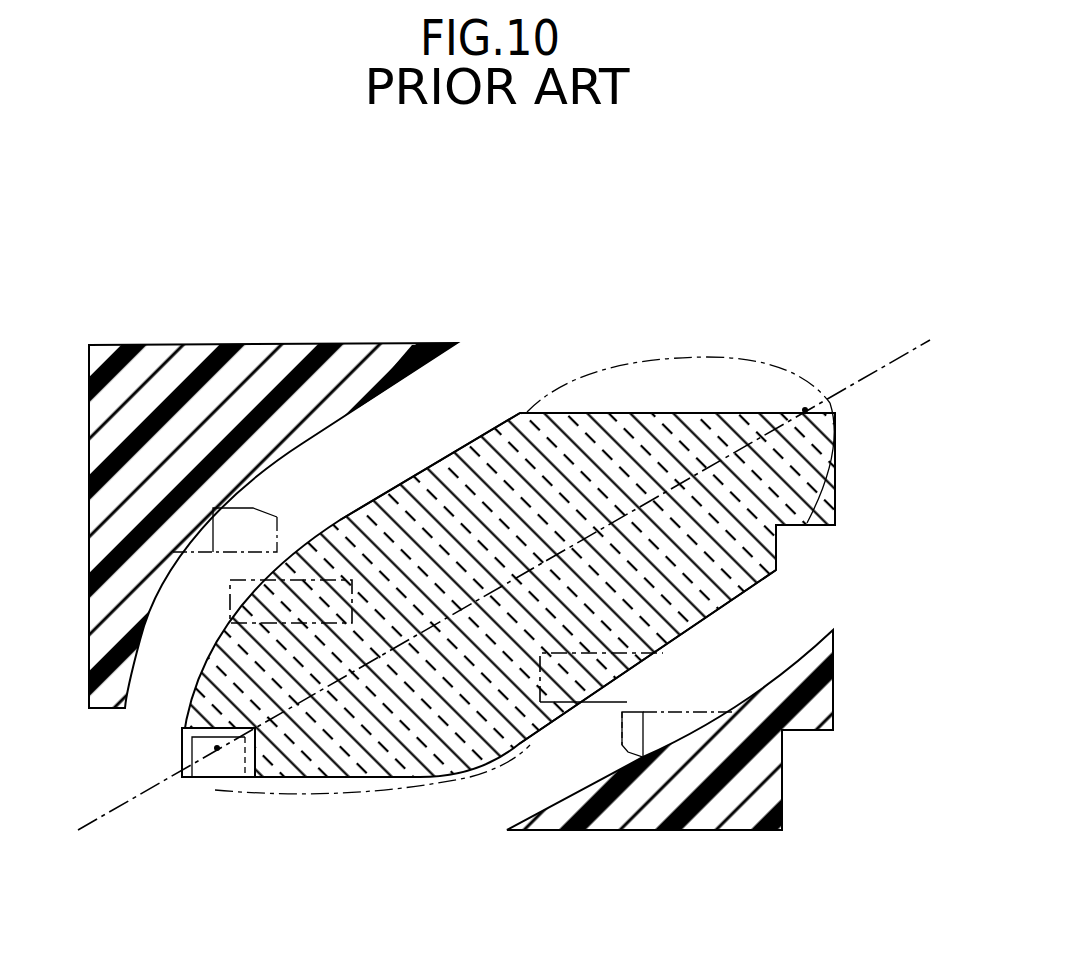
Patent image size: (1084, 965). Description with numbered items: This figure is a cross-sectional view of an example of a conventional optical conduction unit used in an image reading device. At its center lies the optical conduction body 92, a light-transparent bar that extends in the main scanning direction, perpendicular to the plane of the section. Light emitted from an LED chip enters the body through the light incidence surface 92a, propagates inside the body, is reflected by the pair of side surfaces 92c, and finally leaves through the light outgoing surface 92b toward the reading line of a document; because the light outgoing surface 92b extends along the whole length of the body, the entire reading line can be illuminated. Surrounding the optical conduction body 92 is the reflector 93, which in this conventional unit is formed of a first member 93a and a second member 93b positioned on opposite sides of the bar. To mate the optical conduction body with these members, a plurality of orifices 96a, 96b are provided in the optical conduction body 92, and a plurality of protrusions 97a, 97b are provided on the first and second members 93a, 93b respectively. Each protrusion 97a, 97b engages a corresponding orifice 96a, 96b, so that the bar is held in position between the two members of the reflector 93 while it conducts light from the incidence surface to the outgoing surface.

The optical conduction body 92 is at (537, 446).
The light incidence surface 92a is at (217, 748).
The light outgoing surface 92b is at (728, 413).
The side surfaces 92c is at (448, 450).
The reflector 93 is at (305, 342).
The first member 93a is at (190, 355).
The second member 93b is at (735, 830).
The orifice 96a is at (262, 605).
The orifice 96b is at (655, 662).
The protrusion 97a is at (240, 517).
The protrusion 97b is at (667, 720).